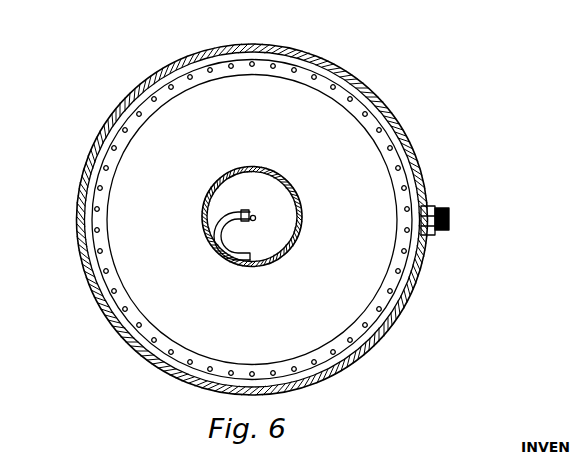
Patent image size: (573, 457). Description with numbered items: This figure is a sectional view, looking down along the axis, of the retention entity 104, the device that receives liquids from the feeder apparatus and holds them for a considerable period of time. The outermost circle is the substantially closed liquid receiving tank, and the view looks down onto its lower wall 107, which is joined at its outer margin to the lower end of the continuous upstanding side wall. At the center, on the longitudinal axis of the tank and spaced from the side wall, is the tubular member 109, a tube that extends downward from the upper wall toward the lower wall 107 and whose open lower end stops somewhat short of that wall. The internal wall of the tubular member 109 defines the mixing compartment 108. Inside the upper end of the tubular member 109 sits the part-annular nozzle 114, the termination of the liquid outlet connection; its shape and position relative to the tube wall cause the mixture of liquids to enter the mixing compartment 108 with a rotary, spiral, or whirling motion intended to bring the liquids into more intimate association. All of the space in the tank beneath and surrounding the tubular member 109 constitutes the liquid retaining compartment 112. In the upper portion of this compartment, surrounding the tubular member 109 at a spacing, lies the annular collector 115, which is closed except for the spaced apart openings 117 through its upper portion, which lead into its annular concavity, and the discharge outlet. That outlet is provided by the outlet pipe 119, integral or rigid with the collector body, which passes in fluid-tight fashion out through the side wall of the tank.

The retention entity 104 is at (91, 140).
The lower wall 107 is at (289, 86).
The liquid retaining compartment 112 is at (350, 122).
The annular collector 115 is at (135, 317).
The spaced apart openings 117 is at (379, 312).
The mixing compartment 108 is at (283, 192).
The tubular member 109 is at (302, 222).
The part-annular nozzle 114 is at (232, 233).
The outlet pipe 119 is at (445, 209).